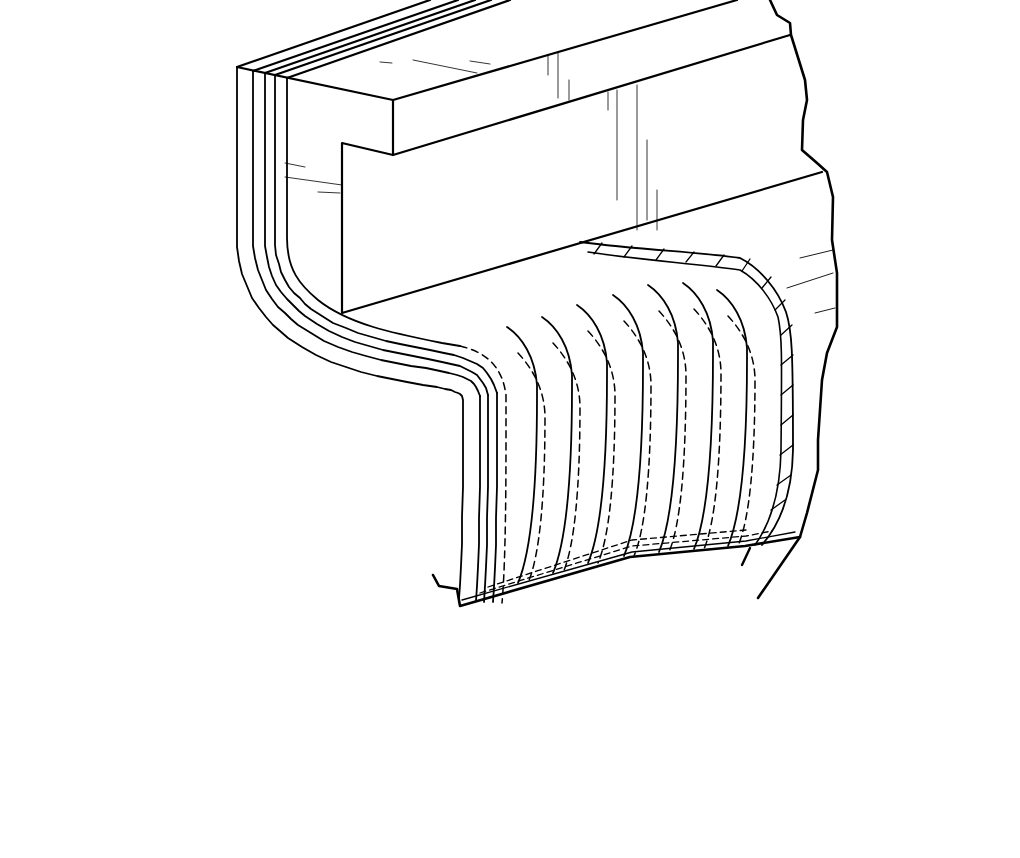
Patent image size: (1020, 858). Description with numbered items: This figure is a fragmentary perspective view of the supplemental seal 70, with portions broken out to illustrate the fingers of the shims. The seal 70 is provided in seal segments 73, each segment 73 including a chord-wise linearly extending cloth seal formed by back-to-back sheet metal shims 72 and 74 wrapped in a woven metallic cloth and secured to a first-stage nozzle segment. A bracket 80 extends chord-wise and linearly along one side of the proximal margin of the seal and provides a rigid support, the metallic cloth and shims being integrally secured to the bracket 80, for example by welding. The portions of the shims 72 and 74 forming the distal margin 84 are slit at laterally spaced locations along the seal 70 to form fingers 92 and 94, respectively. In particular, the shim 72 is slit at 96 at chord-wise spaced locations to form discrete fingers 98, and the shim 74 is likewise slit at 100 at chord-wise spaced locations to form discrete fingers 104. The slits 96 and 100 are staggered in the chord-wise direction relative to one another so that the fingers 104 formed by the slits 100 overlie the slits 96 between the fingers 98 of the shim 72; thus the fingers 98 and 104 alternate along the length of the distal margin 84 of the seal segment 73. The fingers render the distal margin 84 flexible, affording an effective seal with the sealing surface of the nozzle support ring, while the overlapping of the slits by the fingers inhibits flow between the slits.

The supplemental seal 70 is at (145, 144).
The shim 72 is at (311, 343).
The seal segment 73 is at (237, 167).
The shim 74 is at (286, 268).
The bracket 80 is at (778, 115).
The distal margin 84 is at (812, 403).
The fingers 92 is at (487, 485).
The fingers 94 is at (497, 427).
The slit 96 is at (563, 575).
The fingers 98 is at (501, 608).
The slit 100 is at (640, 467).
The fingers 104 is at (663, 470).